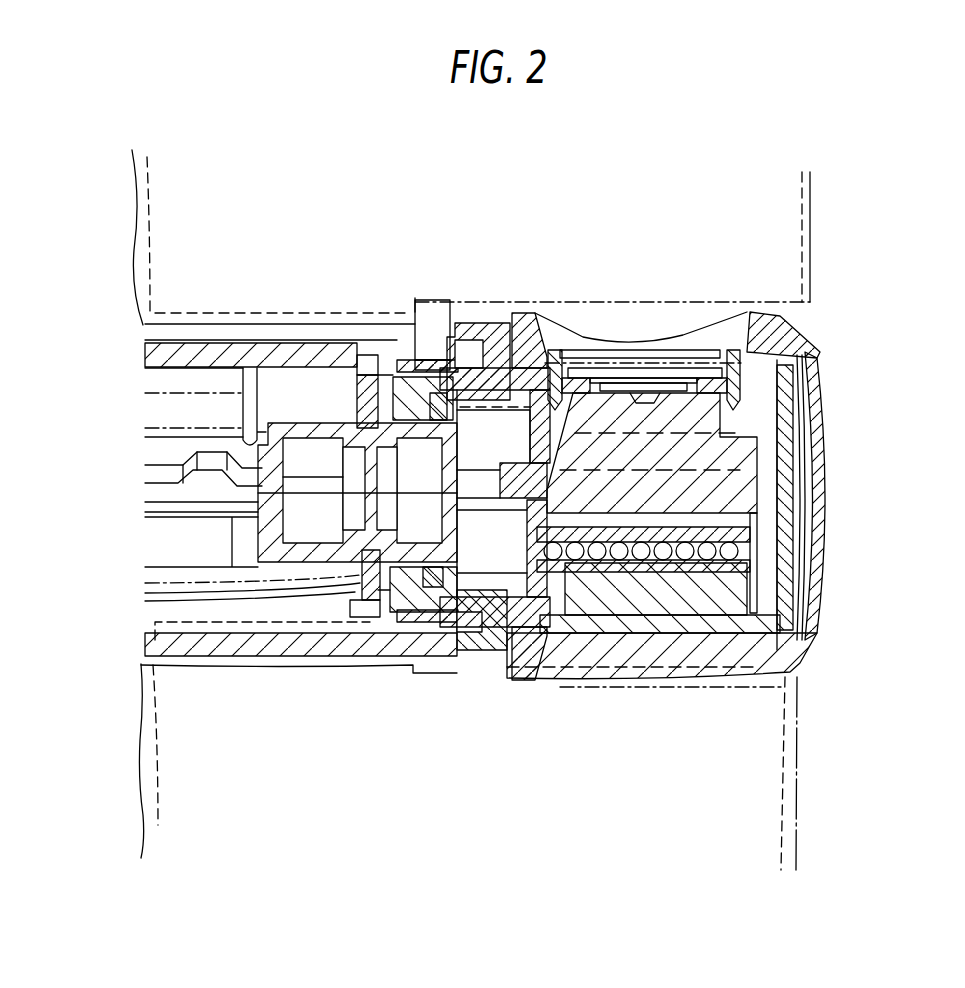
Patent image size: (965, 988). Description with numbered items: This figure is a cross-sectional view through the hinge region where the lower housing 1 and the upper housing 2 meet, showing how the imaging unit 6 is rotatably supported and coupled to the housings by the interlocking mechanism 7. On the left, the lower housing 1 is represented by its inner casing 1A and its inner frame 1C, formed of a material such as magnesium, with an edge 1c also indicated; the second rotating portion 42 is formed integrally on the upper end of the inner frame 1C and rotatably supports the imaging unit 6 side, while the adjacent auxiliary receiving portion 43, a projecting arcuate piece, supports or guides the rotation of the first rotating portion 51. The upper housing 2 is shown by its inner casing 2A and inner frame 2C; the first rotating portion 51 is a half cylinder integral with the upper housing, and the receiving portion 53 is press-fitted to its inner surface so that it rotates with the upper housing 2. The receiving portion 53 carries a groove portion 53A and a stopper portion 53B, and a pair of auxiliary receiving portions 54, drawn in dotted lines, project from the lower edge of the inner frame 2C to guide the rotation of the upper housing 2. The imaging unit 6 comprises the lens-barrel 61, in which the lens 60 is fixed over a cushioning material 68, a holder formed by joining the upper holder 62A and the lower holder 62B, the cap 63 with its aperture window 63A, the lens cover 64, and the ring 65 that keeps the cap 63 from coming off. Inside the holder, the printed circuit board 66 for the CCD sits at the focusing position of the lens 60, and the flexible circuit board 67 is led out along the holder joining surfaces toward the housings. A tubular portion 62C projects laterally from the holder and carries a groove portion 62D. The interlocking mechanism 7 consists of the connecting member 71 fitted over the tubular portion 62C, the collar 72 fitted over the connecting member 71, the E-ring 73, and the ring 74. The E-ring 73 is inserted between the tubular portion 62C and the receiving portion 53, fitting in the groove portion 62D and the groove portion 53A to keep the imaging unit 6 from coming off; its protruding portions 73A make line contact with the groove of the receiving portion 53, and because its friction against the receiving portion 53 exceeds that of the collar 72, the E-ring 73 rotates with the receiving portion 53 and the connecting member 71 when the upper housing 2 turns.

The lower housing 1 is at (581, 778).
The inner casing 1A is at (800, 720).
The inner frame 1C is at (800, 783).
The first housing edge 1c is at (159, 784).
The upper housing 2 is at (150, 225).
The inner casing 2A is at (812, 262).
The inner frame 2C is at (806, 207).
The imaging unit 6 is at (856, 331).
The interlocking mechanism 7 is at (468, 688).
The second rotating portion 42 is at (418, 332).
The auxiliary receiving portion 43 is at (200, 618).
The first rotating portion 51 is at (272, 323).
The receiving portion 53 is at (153, 353).
The groove portion 53A is at (380, 358).
The stopper portion 53B is at (402, 345).
The auxiliary receiving portion 54 is at (243, 453).
The lens 60 is at (770, 452).
The lens-barrel 61 is at (760, 475).
The upper holder 62A is at (787, 408).
The lower holder 62B is at (782, 590).
The tubular portion 62C is at (243, 417).
The groove portion 62D is at (378, 628).
The cap 63 is at (800, 522).
The aperture window 63A is at (545, 345).
The lens cover 64 is at (602, 348).
The ring 65 is at (562, 352).
The printed circuit board 66 is at (750, 565).
The flexible circuit board 67 is at (323, 500).
The cushioning material 68 is at (693, 640).
The connecting member 71 is at (503, 335).
The collar 72 is at (447, 345).
The E-ring 73 is at (357, 378).
The protruding portions 73A is at (338, 358).
The ring 74 is at (475, 332).